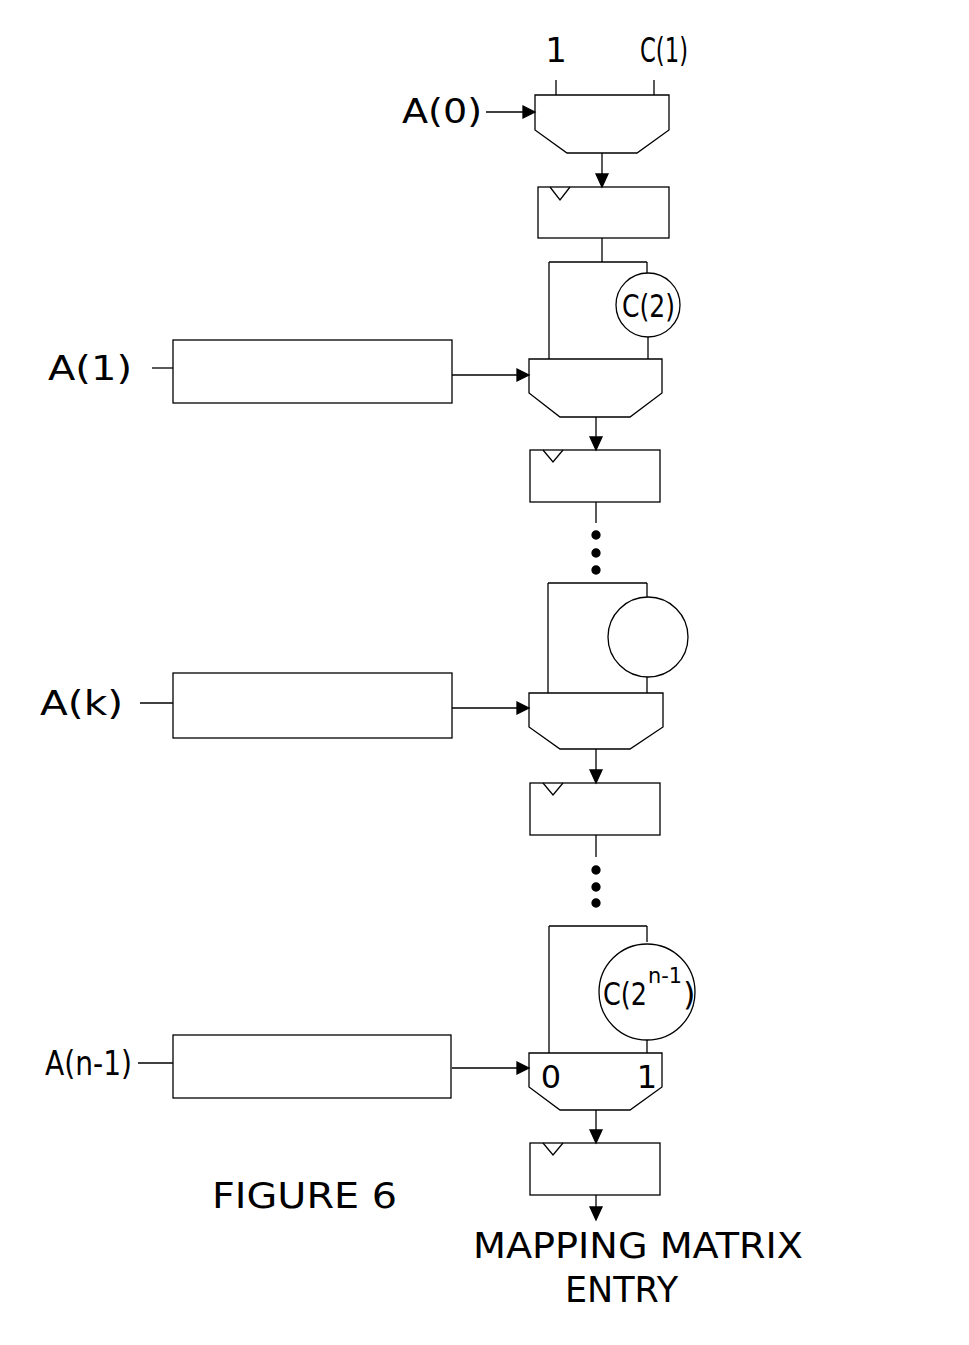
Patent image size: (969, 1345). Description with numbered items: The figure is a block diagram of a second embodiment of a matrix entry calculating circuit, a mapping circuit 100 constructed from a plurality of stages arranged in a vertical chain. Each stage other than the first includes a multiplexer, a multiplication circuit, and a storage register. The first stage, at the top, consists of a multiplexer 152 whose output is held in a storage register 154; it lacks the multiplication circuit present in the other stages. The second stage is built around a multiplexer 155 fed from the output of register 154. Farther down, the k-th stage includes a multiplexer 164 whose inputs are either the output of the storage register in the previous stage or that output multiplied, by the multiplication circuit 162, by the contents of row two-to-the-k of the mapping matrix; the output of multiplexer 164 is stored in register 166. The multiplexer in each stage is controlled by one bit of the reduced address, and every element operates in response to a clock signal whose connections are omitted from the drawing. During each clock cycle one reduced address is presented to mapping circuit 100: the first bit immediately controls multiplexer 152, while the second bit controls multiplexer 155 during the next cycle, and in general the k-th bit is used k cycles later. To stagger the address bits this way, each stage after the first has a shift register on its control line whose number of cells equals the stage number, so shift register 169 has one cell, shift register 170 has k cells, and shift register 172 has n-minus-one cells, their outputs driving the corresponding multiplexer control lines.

The mapping circuit 100 is at (186, 207).
The multiplexer 152 is at (663, 117).
The storage register 154 is at (663, 222).
The multiplexer 155 is at (658, 378).
The multiplication circuit 162 is at (715, 613).
The multiplexer 164 is at (658, 718).
The register 166 is at (645, 815).
The shift register 169 is at (315, 343).
The shift register 170 is at (315, 677).
The shift register 172 is at (330, 1048).